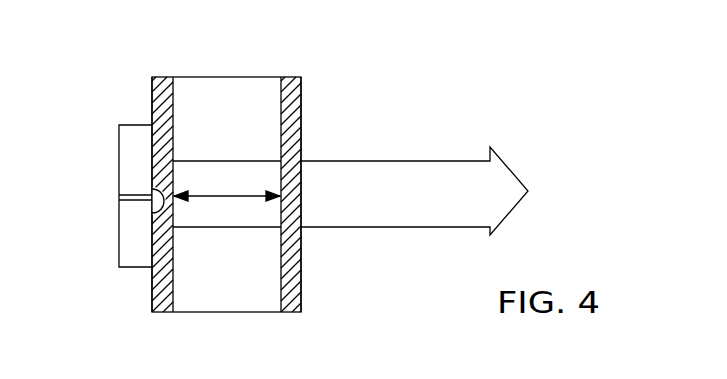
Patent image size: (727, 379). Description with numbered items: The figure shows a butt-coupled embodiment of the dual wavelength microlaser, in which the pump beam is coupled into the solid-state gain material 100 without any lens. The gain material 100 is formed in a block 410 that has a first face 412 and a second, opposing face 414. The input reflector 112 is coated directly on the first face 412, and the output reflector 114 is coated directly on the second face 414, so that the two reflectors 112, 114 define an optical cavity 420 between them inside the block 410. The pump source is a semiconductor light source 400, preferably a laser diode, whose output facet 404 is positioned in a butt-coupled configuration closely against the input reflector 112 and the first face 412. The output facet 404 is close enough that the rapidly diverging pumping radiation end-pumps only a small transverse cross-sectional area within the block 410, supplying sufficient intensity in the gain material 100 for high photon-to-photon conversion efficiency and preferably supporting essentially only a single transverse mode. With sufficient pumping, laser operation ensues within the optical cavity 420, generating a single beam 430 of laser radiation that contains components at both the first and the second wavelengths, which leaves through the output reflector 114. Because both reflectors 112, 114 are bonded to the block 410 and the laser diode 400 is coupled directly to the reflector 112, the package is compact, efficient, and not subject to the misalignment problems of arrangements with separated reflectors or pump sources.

The solid-state gain material 100 is at (263, 293).
The input reflector 112 is at (152, 101).
The output reflector 114 is at (302, 99).
The semiconductor light source 400 is at (130, 157).
The output facet 404 is at (158, 212).
The block 410 is at (231, 77).
The first face 412 is at (160, 77).
The second face 414 is at (292, 77).
The optical cavity 420 is at (226, 192).
The beam of laser radiation 430 is at (358, 210).